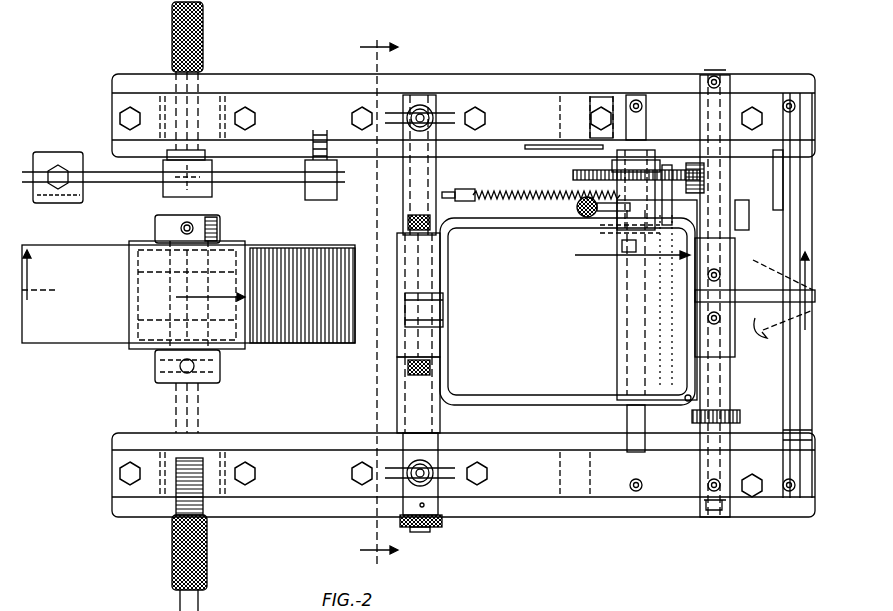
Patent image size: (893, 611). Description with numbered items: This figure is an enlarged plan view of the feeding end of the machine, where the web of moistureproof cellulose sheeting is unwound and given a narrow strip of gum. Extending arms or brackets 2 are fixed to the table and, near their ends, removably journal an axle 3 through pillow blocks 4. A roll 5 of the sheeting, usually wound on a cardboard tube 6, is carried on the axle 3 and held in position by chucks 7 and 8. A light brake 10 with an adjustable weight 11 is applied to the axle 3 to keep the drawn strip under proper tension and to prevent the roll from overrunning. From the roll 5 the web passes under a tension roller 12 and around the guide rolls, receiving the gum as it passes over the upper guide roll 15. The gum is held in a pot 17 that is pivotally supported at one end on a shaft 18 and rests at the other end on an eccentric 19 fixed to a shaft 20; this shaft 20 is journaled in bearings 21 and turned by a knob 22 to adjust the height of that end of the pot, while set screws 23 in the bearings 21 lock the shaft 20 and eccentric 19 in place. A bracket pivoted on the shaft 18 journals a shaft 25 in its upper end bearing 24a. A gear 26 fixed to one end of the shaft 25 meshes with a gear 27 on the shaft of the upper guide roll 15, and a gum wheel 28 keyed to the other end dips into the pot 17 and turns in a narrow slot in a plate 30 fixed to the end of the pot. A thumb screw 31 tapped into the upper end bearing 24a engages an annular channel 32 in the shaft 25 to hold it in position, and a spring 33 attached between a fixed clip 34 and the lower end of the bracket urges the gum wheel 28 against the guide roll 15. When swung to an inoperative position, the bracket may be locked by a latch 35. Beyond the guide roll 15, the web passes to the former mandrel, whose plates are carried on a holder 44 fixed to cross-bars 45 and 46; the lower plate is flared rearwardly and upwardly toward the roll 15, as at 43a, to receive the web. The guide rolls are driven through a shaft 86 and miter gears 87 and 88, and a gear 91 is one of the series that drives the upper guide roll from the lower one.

The extending arms or brackets 2 is at (290, 85).
The axle 3 is at (205, 405).
The pillow blocks 4 is at (208, 108).
The roll 5 is at (90, 330).
The cardboard tube 6 is at (132, 258).
The chuck 7 is at (218, 224).
The chuck 8 is at (220, 350).
The light brake 10 is at (168, 192).
The adjustable weight 11 is at (66, 200).
The tension roller 12 is at (400, 242).
The upper guide roll 15 is at (735, 348).
The pot 17 is at (540, 390).
The shaft 18 is at (630, 420).
The eccentric 19 is at (418, 318).
The shaft 20 is at (410, 396).
The bearings 21 is at (425, 105).
The knob 22 is at (442, 522).
The set screws 23 is at (432, 113).
The upper end bearing 24a is at (655, 200).
The shaft 25 is at (622, 246).
The gear 26 is at (573, 175).
The gear 27 is at (706, 176).
The gum wheel 28 is at (584, 256).
The plate 30 is at (672, 306).
The thumb screw 31 is at (577, 208).
The annular channel 32 is at (660, 214).
The spring 33 is at (506, 182).
The fixed clip 34 is at (445, 192).
The latch 35 is at (536, 146).
The flared portion of lower plate 43a is at (758, 325).
The holder 44 is at (746, 292).
The cross-bar 45 is at (722, 386).
The cross-bar 46 is at (785, 420).
The shaft 86 is at (790, 205).
The miter gear 87 is at (738, 220).
The miter gear 88 is at (676, 200).
The gear 91 is at (738, 412).